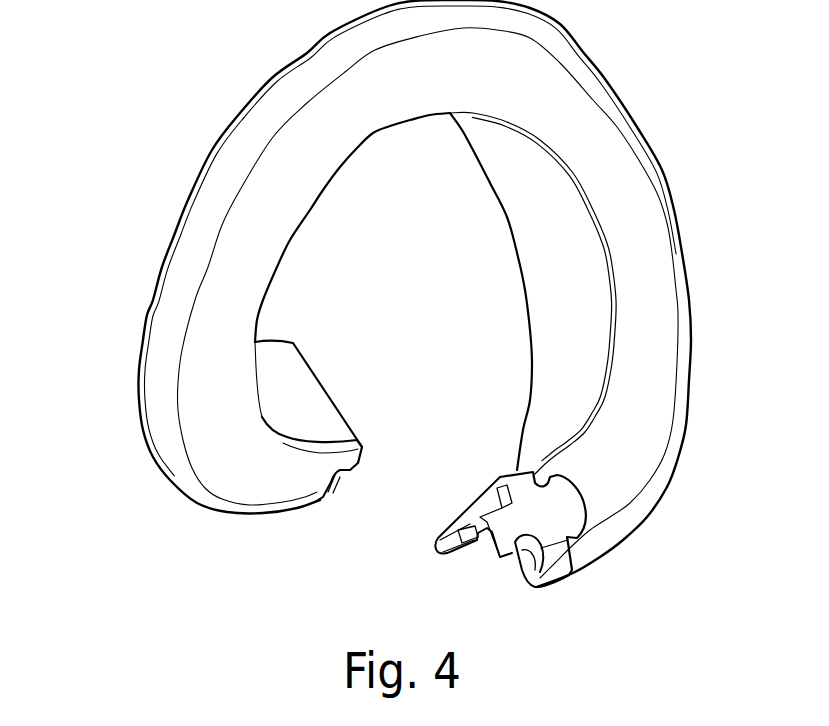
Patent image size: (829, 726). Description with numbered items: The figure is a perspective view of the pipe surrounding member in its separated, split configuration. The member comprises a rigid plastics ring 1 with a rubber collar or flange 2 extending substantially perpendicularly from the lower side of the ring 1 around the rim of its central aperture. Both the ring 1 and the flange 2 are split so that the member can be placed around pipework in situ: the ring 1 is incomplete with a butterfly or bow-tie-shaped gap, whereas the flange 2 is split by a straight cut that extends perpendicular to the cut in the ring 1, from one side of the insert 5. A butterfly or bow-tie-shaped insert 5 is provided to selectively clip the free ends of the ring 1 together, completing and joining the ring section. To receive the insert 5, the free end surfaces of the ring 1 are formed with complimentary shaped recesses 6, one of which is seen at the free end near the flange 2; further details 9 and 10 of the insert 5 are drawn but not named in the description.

The rigid plastics ring 1 is at (610, 160).
The rubber collar or flange 2 is at (288, 373).
The butterfly or bow-tie-shaped insert 5 is at (550, 520).
The complimentary shaped recesses 6 is at (343, 477).
The tongue 9 is at (464, 513).
The tab 10 is at (478, 547).